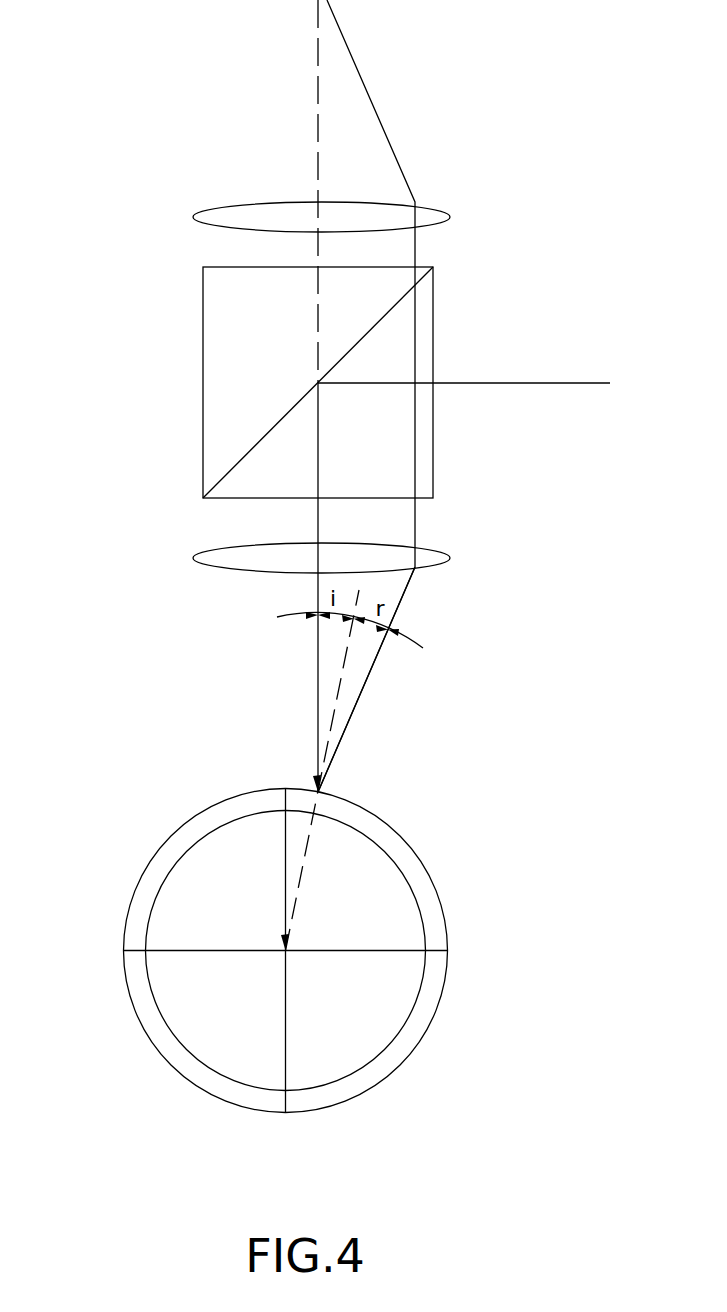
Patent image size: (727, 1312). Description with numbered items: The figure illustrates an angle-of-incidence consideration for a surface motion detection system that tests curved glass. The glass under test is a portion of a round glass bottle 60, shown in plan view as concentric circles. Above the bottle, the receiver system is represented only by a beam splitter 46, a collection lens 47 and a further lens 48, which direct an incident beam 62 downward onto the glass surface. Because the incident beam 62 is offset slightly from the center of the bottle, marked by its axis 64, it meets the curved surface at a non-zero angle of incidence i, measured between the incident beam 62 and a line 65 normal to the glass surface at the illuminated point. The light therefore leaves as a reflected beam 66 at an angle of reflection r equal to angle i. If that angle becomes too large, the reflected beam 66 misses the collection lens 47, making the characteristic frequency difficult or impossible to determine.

The beam splitter 46 is at (203, 403).
The collection lens 47 is at (192, 558).
The lens 48 is at (192, 217).
The glass bottle 60 is at (387, 1075).
The incident beam 62 is at (317, 693).
The axis 64 is at (285, 1042).
The line normal to the glass surface 65 is at (341, 682).
The reflected beam 66 is at (344, 732).